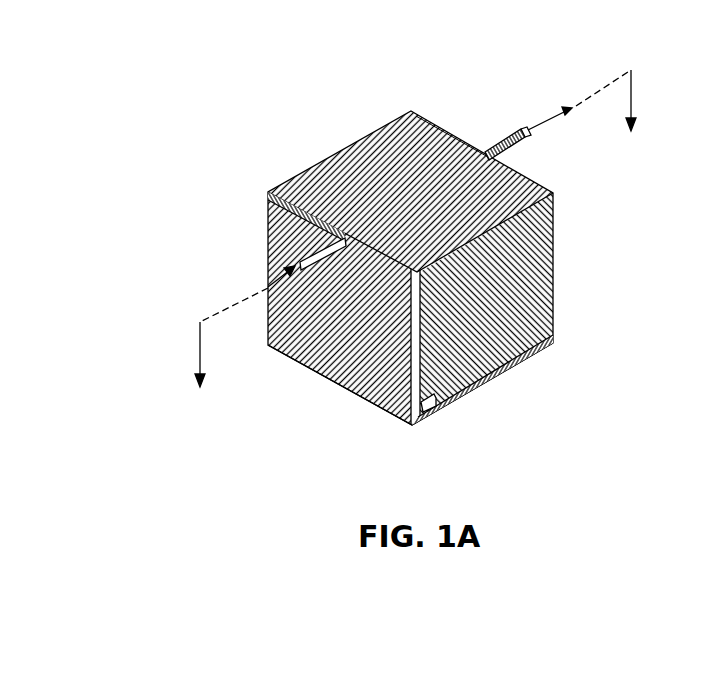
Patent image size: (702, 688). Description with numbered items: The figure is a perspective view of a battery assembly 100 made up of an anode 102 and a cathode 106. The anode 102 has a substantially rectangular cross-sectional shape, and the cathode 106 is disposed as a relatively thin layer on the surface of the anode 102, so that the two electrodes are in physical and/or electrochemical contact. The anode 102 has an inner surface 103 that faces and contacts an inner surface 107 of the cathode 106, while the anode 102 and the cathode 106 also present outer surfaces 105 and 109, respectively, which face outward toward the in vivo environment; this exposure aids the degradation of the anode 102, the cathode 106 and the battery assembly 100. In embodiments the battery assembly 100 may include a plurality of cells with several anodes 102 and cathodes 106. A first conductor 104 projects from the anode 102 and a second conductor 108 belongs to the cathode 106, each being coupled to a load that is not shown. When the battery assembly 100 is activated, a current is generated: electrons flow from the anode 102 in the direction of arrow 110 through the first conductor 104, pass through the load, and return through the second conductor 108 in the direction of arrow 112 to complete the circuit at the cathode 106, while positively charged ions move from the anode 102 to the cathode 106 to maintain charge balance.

The battery assembly 100 is at (272, 81).
The anode 102 is at (535, 266).
The inner surface of the anode 103 is at (526, 350).
The first conductor 104 is at (495, 150).
The outer surface of the anode 105 is at (360, 168).
The cathode 106 is at (478, 390).
The inner surface of the cathode 107 is at (398, 418).
The second conductor 108 is at (318, 243).
The outer surface of the cathode 109 is at (330, 358).
The arrow 110 is at (546, 114).
The arrow 112 is at (268, 287).